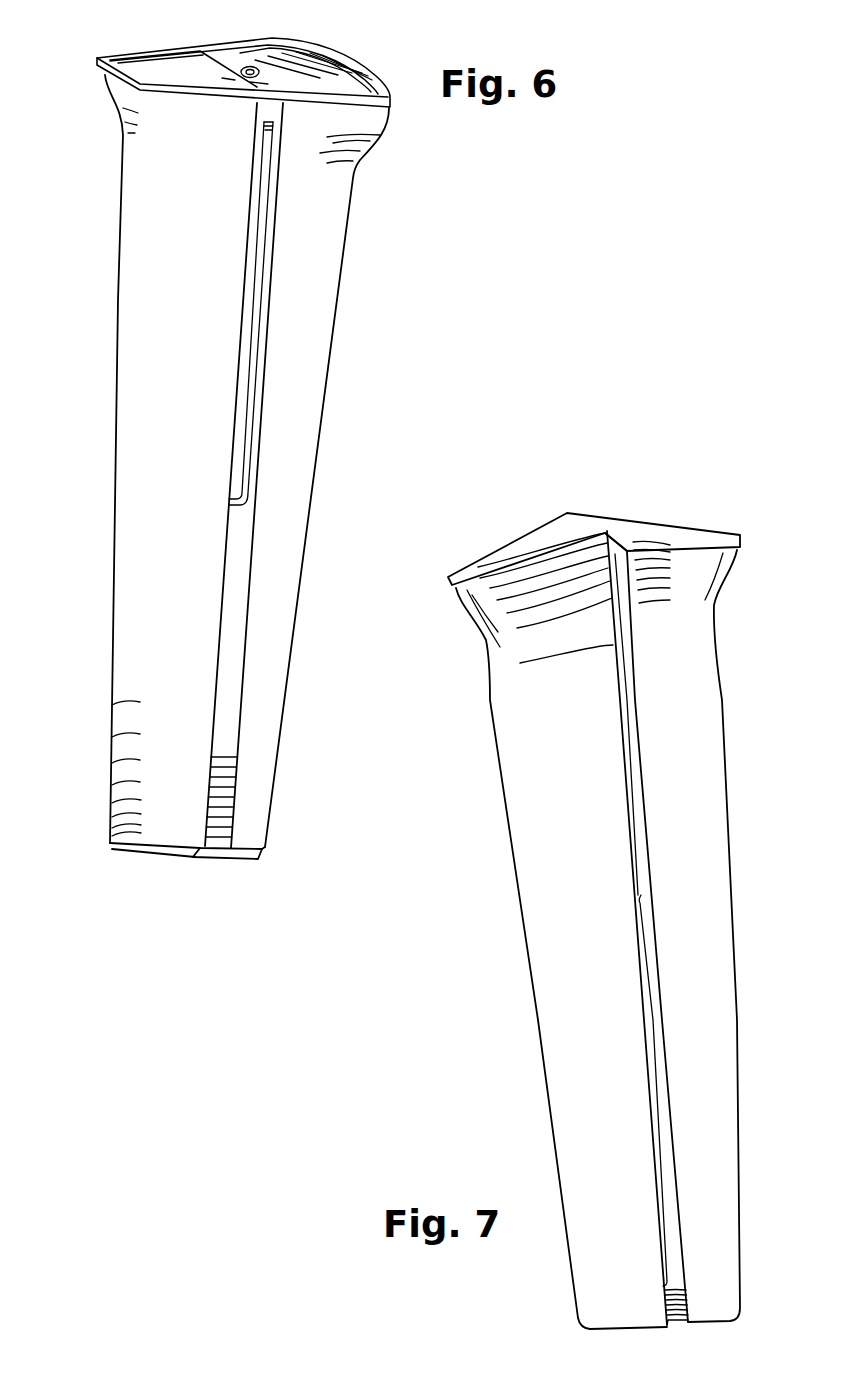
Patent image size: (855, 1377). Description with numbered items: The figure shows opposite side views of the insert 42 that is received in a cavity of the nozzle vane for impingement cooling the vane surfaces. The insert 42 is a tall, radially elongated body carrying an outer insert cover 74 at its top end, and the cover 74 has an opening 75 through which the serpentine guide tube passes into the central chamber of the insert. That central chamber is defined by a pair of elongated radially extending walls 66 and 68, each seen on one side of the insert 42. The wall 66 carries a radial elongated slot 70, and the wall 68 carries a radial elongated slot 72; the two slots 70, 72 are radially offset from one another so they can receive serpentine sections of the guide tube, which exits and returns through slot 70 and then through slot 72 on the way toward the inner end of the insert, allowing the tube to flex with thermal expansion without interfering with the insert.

In FIG. 6, the insert 42 is at (145, 324).
In FIG. 7, the insert 42 is at (508, 834).
In FIG. 6, the wall 66 is at (268, 113).
In FIG. 7, the wall 68 is at (639, 823).
In FIG. 6, the slot 70 is at (256, 211).
In FIG. 7, the slot 72 is at (652, 1037).
In FIG. 7, the outer insert cover 74 is at (542, 523).
In FIG. 6, the opening 75 is at (244, 67).